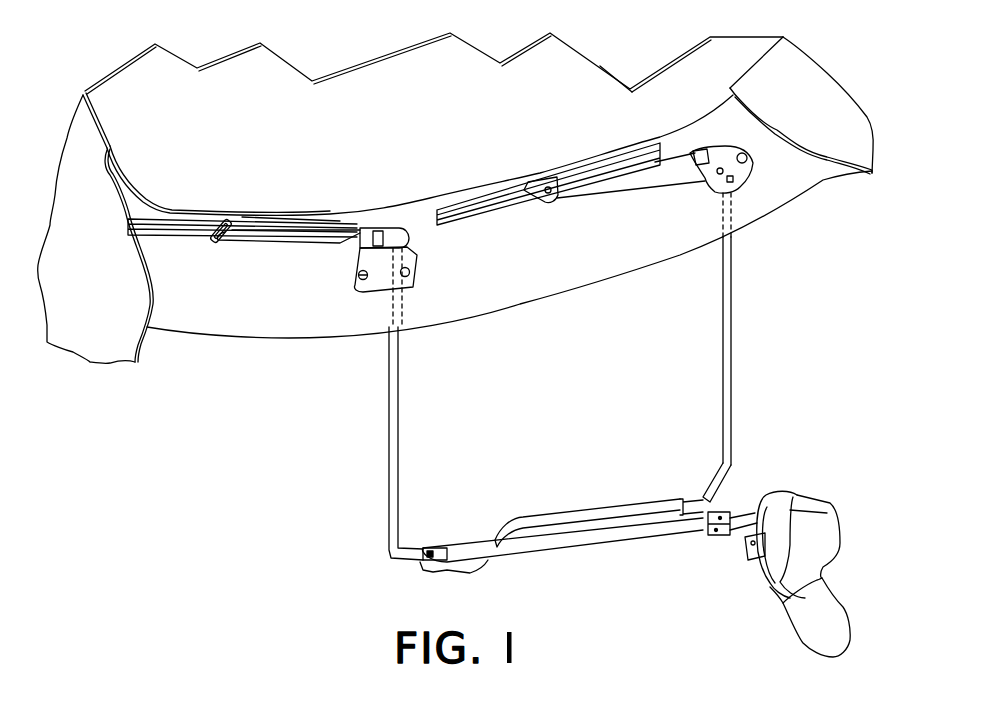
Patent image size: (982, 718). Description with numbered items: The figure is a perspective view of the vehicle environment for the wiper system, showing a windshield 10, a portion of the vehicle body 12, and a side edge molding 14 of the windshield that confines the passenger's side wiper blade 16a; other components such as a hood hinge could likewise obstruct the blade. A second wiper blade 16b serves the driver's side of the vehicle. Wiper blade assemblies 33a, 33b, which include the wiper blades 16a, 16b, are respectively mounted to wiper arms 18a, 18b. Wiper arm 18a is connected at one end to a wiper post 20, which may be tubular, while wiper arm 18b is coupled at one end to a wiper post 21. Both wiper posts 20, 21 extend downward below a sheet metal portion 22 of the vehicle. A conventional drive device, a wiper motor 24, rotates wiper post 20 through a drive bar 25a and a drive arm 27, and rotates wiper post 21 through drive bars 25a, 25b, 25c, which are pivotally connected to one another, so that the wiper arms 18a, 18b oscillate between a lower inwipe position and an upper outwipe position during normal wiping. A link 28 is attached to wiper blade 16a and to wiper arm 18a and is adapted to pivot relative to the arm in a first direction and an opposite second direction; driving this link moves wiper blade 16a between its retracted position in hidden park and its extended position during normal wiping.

The windshield 10 is at (340, 85).
The vehicle body 12 is at (97, 125).
The side edge molding 14 is at (127, 242).
The wiper blade 16a is at (187, 230).
The wiper blade 16b is at (492, 200).
The wiper arm 18a is at (301, 238).
The wiper arm 18b is at (612, 178).
The wiper post 20 is at (399, 417).
The wiper post 21 is at (733, 377).
The sheet metal portion 22 is at (218, 313).
The wiper motor 24 is at (830, 530).
The drive bar 25a is at (572, 540).
The drive bar 25b is at (583, 518).
The drive bar 25c is at (710, 483).
The drive arm 27 is at (418, 548).
The link 28 is at (210, 236).
The wiper blade assembly 33a is at (241, 214).
The wiper blade assembly 33b is at (567, 167).